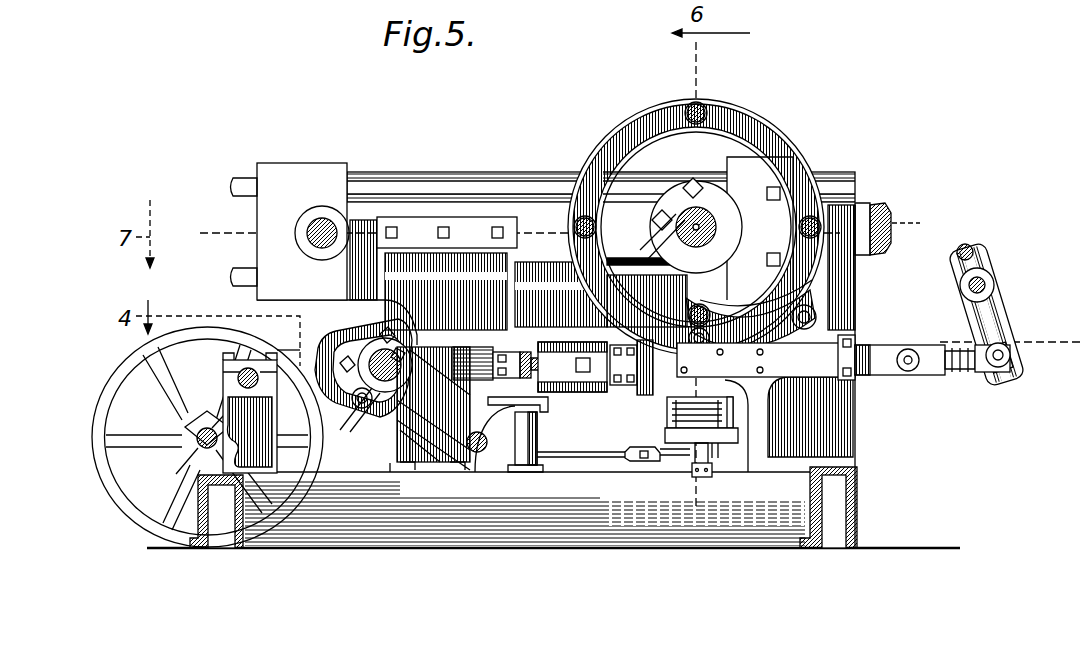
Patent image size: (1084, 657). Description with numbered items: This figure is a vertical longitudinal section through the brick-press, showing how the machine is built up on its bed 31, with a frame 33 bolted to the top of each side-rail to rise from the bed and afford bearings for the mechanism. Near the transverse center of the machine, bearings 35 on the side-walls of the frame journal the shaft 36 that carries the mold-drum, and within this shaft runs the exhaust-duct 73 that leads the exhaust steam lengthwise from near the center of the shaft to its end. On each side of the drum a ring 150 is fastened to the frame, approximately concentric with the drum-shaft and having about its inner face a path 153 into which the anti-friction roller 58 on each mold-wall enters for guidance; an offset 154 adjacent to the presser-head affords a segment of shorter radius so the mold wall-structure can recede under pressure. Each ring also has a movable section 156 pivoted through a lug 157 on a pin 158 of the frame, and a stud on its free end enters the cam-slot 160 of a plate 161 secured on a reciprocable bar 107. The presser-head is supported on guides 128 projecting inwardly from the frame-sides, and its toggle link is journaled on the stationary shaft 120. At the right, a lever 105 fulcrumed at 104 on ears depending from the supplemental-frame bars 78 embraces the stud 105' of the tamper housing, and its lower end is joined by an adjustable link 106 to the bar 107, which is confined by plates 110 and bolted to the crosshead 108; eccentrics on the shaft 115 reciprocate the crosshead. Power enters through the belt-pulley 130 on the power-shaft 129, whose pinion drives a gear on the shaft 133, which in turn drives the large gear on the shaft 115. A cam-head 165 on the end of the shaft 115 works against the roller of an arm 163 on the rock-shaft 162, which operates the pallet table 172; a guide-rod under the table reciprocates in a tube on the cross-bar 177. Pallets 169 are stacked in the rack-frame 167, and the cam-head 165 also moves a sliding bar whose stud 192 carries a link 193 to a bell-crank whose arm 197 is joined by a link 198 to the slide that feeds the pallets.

The bed 31 is at (200, 494).
The frame 33 is at (868, 462).
The bearings 35 is at (724, 250).
The shaft 36 is at (717, 216).
The anti-friction roller 58 is at (583, 227).
The exhaust-duct 73 is at (727, 227).
The supplemental-frame bars 78 is at (895, 217).
The fulcrum 104 is at (990, 287).
The lever 105 is at (1006, 314).
The stud 105' is at (983, 230).
The link 106 is at (972, 350).
The bar 107 is at (912, 368).
The crosshead 108 is at (552, 367).
The plate 110 is at (845, 362).
The shaft 115 is at (362, 400).
The stationary shaft 120 is at (318, 228).
The guides 128 is at (420, 230).
The power-shaft 129 is at (197, 436).
The belt-pulley 130 is at (108, 395).
The shaft 133 is at (238, 377).
The ring 150 is at (612, 147).
The path 153 is at (750, 124).
The offset 154 is at (650, 250).
The movable section 156 is at (828, 288).
The lug 157 is at (872, 303).
The pin 158 is at (880, 303).
The cam-slot 160 is at (724, 348).
The plate 161 is at (766, 360).
The rock-shaft 162 is at (485, 450).
The arm 163 is at (410, 464).
The cam-head 165 is at (352, 342).
The rack-frame 167 is at (672, 413).
The pallet 169 is at (726, 434).
The table 172 is at (713, 440).
The cross-bar 177 is at (696, 479).
The stud 192 is at (550, 407).
The link 193 is at (522, 417).
The arm 197 is at (592, 458).
The link 198 is at (660, 462).